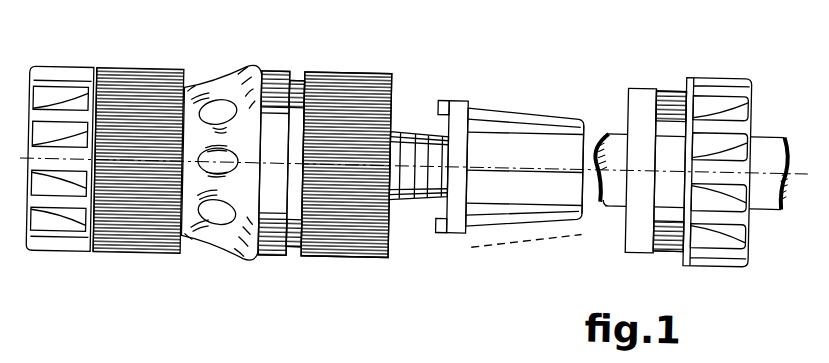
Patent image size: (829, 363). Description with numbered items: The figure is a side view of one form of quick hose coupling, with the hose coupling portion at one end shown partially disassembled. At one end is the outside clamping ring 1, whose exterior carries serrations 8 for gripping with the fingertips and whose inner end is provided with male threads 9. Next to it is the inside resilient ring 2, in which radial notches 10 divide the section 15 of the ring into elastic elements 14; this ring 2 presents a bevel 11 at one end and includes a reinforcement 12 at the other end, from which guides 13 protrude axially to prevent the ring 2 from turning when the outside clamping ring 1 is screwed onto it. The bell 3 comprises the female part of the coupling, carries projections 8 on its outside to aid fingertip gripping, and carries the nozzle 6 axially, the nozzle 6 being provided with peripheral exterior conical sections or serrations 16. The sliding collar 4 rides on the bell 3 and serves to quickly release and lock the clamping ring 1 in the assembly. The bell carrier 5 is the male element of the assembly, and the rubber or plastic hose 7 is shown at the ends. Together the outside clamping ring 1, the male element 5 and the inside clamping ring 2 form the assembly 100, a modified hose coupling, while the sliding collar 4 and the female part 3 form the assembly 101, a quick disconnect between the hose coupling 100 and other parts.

The outside clamping ring 1 is at (67, 82).
The inside resilient ring 2 is at (525, 172).
The bell 3 is at (327, 87).
The sliding collar 4 is at (223, 83).
The bell carrier 5 is at (133, 88).
The nozzle 6 is at (419, 172).
The hose 7 is at (767, 183).
The serrations 8 is at (748, 62).
The male threads 9 is at (638, 70).
The radial notches 10 is at (593, 118).
The bevel 11 is at (580, 96).
The reinforcement 12 is at (462, 86).
The guides 13 is at (442, 99).
The elastic elements 14 is at (543, 182).
The section 15 is at (493, 233).
The conical sections 16 is at (416, 199).
The assembly 100 is at (386, 187).
The assembly 101 is at (320, 261).